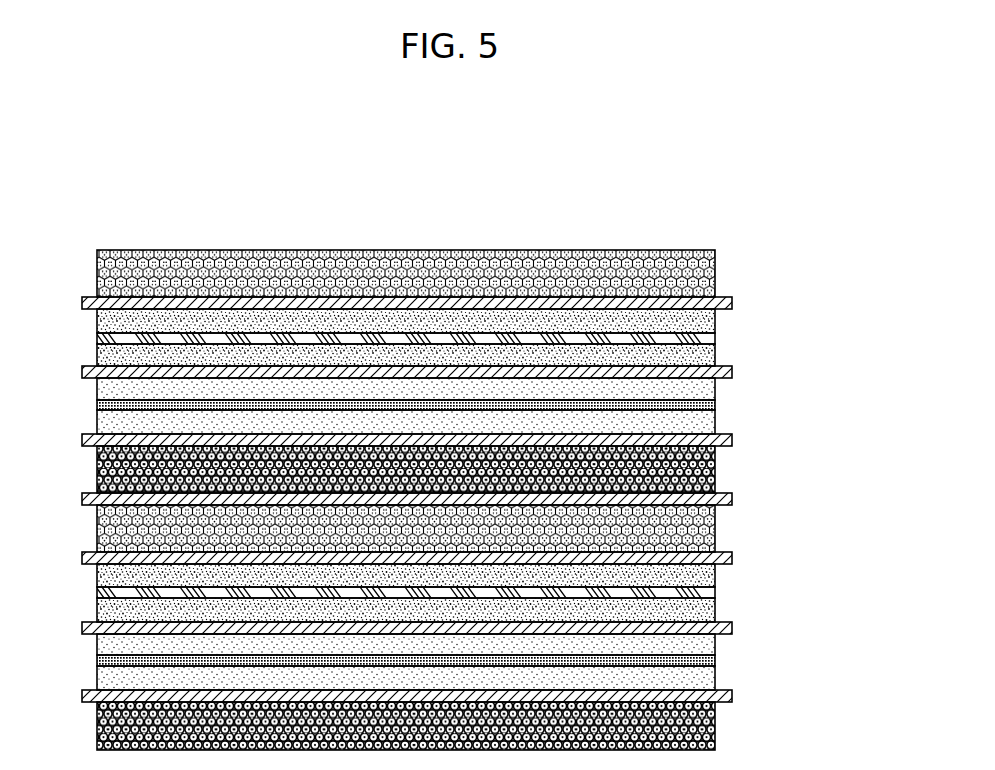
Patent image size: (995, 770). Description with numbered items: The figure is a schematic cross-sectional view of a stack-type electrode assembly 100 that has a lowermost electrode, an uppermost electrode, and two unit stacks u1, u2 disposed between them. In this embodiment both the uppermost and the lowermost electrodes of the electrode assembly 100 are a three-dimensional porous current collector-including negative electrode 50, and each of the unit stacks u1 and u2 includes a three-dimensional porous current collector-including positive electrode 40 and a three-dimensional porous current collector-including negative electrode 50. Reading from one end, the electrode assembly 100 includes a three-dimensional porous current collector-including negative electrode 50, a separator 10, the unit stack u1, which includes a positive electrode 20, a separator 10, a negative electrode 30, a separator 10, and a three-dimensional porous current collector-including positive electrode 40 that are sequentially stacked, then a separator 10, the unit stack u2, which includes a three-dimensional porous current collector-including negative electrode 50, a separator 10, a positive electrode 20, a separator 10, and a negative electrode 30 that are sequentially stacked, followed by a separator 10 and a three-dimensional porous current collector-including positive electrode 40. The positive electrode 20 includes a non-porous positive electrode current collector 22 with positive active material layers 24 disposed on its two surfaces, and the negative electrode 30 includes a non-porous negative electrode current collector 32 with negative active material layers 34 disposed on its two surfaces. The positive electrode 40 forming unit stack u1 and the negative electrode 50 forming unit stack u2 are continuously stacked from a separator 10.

The electrode assembly 100 is at (713, 170).
The separator 10 is at (82, 303).
The positive electrode 20 is at (771, 379).
The positive electrode current collector 22 is at (716, 405).
The positive active material layer 24 is at (716, 390).
The negative electrode 30 is at (771, 311).
The negative electrode current collector 32 is at (716, 339).
The negative active material layer 34 is at (716, 323).
The 3D porous current collector-including positive electrode 40 is at (716, 276).
The 3D porous current collector-including negative electrode 50 is at (716, 473).
The unit stack u1 is at (826, 530).
The unit stack u2 is at (826, 338).